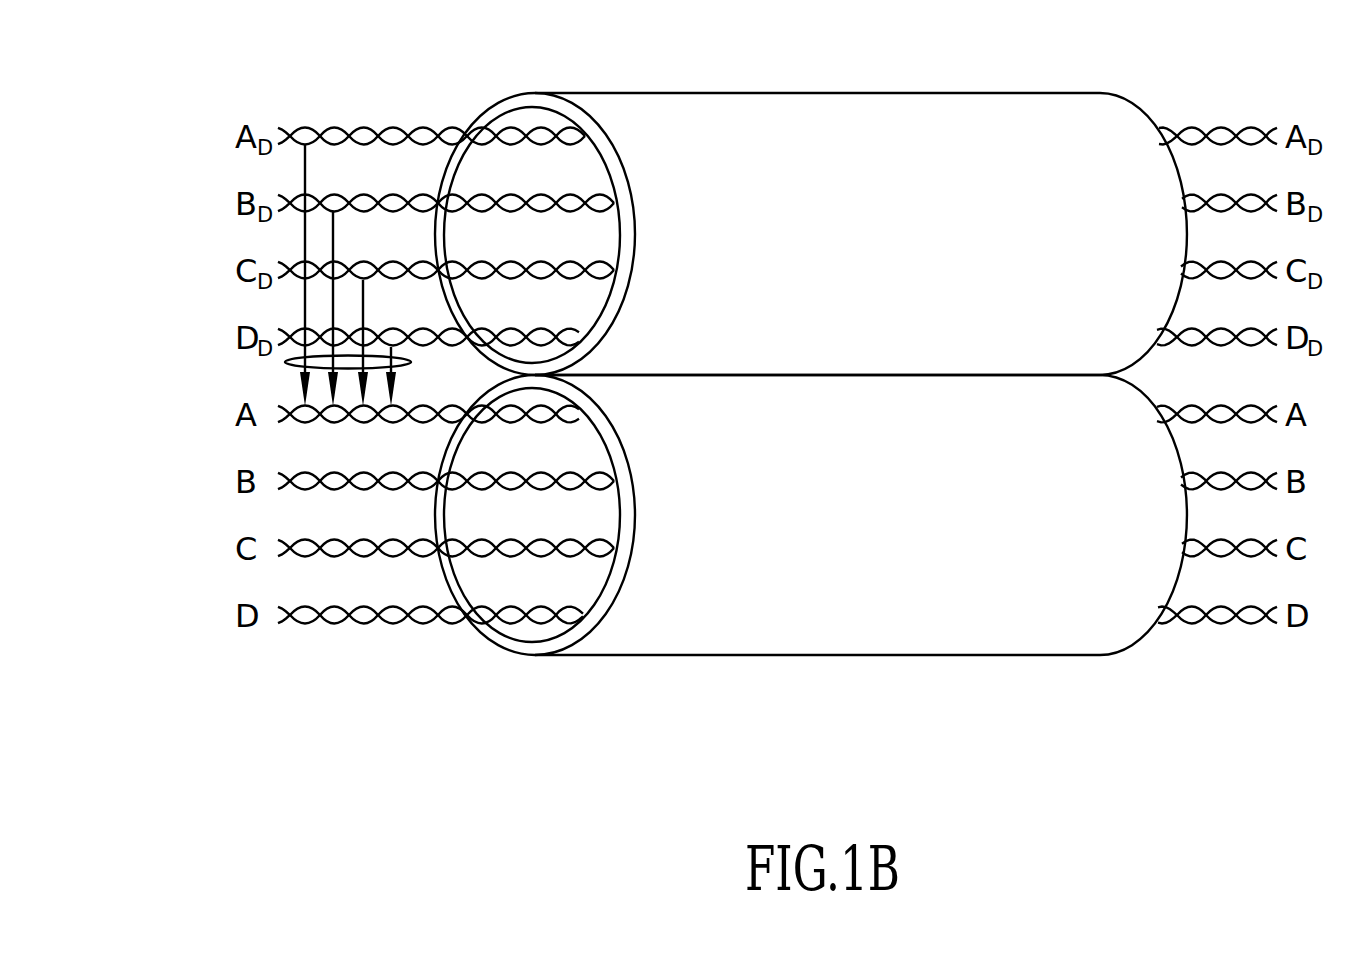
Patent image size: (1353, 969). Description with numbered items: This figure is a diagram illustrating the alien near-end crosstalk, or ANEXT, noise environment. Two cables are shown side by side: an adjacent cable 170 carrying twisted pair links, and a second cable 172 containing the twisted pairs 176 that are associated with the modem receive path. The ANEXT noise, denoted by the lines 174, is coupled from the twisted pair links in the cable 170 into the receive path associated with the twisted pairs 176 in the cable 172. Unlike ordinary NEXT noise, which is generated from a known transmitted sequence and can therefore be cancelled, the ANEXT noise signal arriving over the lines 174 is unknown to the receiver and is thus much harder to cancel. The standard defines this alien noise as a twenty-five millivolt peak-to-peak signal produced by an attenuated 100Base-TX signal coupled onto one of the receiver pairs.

The cable 170 is at (830, 93).
The cable 172 is at (823, 655).
The lines (ANEXT noise) 174 is at (285, 362).
The twisted pairs 176 is at (1246, 197).